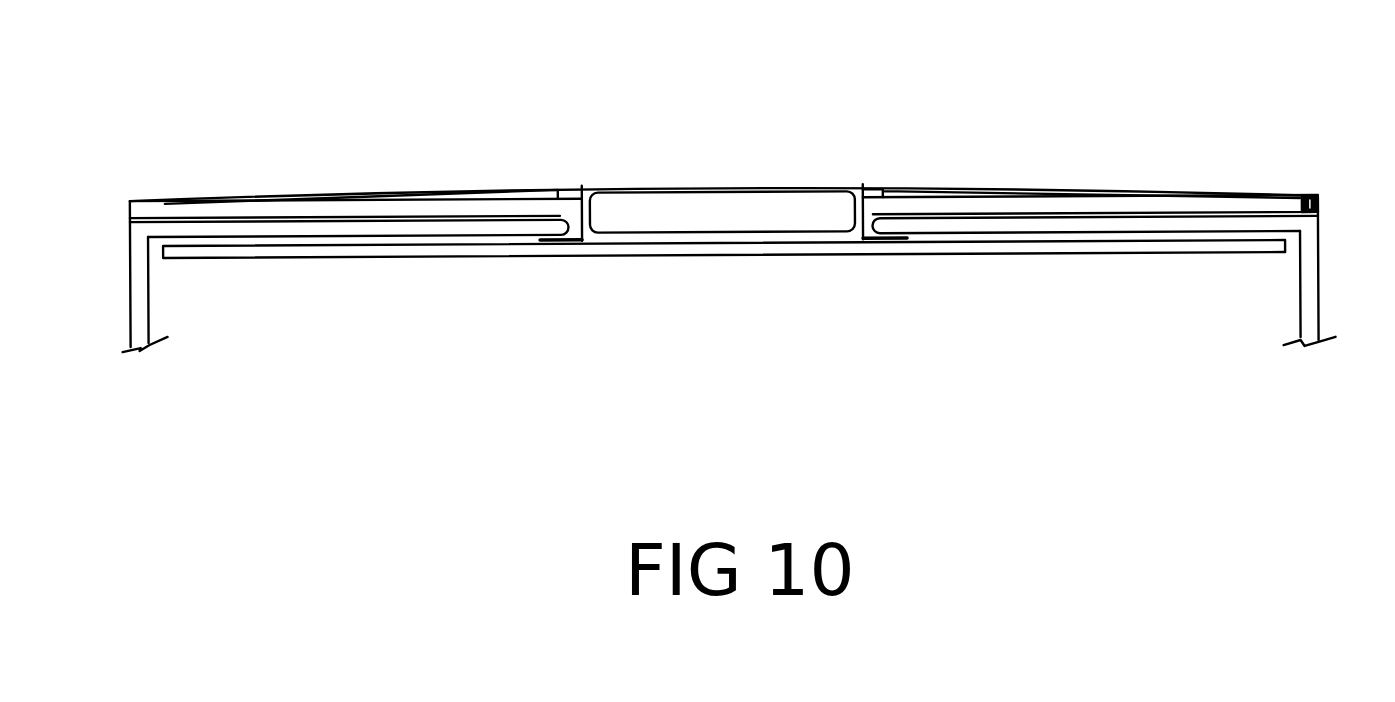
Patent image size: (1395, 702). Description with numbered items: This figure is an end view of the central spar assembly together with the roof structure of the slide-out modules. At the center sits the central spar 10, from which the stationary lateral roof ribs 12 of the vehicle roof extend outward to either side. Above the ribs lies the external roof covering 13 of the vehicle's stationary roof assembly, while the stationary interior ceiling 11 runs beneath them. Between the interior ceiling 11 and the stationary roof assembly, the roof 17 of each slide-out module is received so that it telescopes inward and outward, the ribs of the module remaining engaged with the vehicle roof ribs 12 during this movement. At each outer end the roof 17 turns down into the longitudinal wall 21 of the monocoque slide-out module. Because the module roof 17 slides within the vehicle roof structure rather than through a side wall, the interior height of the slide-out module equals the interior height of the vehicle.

The central spar 10 is at (677, 217).
The interior ceiling 11 is at (812, 248).
The lateral roof ribs 12 is at (336, 216).
The external roof covering 13 is at (482, 193).
The roof 17 is at (263, 233).
The longitudinal wall 21 is at (140, 303).